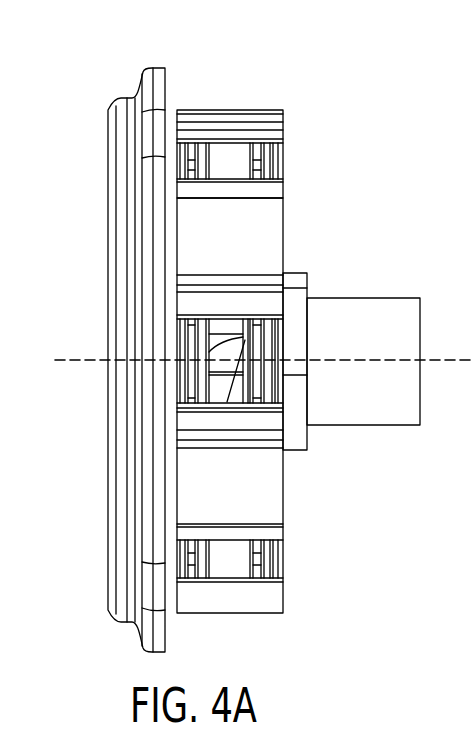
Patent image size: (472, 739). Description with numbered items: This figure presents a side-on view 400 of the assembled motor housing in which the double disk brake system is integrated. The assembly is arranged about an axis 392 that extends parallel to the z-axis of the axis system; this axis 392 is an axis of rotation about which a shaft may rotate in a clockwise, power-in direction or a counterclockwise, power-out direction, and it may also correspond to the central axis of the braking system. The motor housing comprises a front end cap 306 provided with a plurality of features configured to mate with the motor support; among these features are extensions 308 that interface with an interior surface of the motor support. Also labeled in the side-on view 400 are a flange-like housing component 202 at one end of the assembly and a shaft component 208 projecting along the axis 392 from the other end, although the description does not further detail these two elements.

The side-on view 400 is at (365, 39).
The flange / housing 202 is at (108, 165).
The front end cap 306 is at (268, 110).
The extensions 308 is at (283, 233).
The shaft 208 is at (370, 298).
The axis of rotation 392 is at (60, 359).